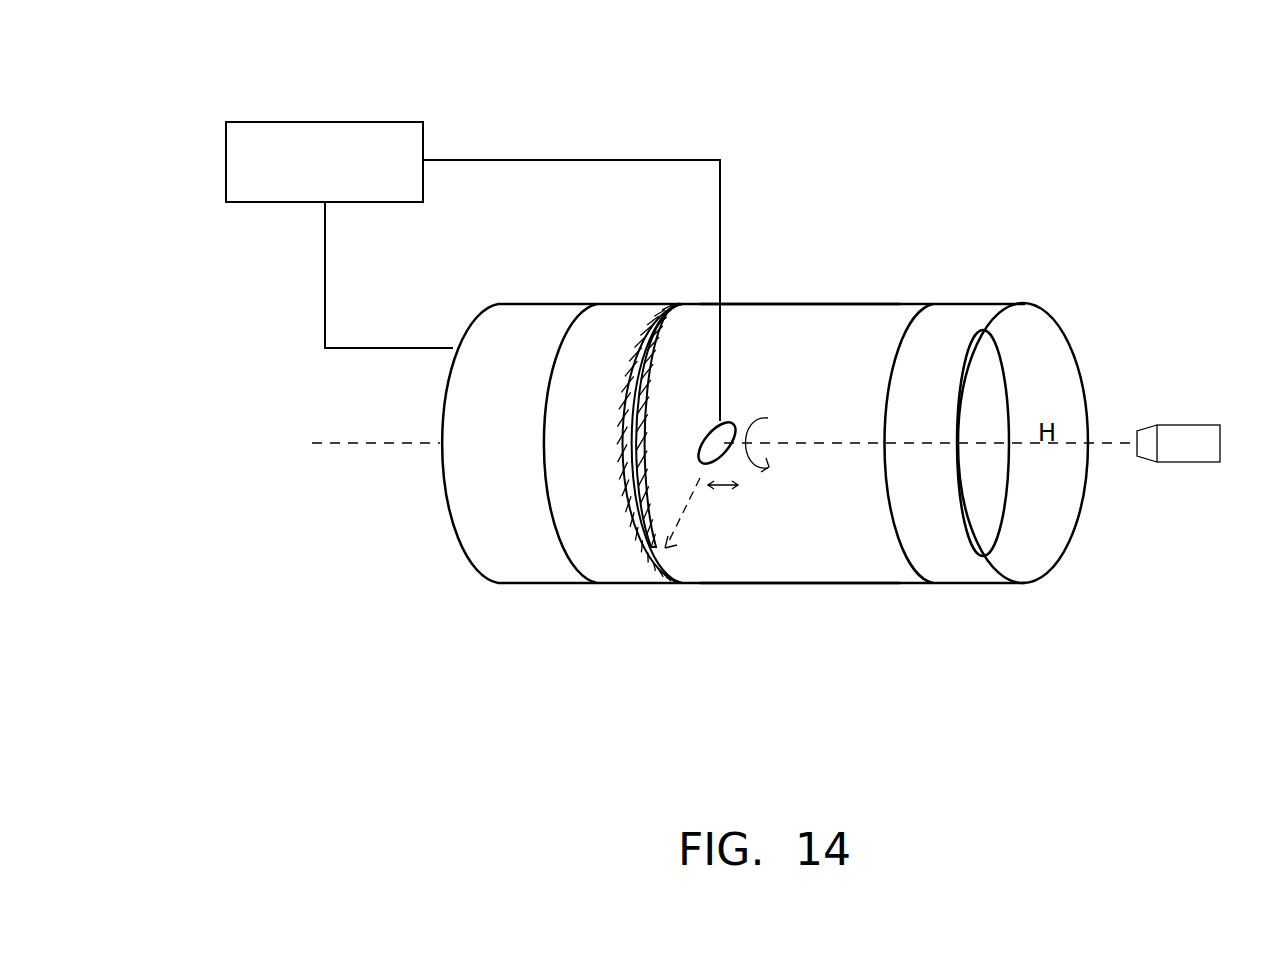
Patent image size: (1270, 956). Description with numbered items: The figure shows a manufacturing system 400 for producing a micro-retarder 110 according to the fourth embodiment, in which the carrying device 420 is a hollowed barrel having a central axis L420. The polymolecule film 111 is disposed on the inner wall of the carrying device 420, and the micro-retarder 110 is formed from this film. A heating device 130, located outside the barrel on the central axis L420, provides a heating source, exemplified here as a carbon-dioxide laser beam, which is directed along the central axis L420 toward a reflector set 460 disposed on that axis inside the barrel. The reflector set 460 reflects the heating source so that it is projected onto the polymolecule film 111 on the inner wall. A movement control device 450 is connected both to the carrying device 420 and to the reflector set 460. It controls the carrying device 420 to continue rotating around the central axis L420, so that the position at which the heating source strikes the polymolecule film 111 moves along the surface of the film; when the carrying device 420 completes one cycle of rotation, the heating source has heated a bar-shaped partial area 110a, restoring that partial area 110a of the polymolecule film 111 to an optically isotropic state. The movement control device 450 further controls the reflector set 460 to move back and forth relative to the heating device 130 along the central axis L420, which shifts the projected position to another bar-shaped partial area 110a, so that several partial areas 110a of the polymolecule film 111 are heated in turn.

The manufacturing system 400 is at (166, 66).
The movement control device 450 is at (226, 160).
The carrying device 420 is at (1070, 332).
The central axis L420 is at (686, 444).
The reflector set 460 is at (733, 422).
The micro-retarder 110 is at (1005, 510).
The partial area 110a is at (661, 570).
The polymolecule film 111 is at (748, 570).
The heating device 130 is at (1213, 465).